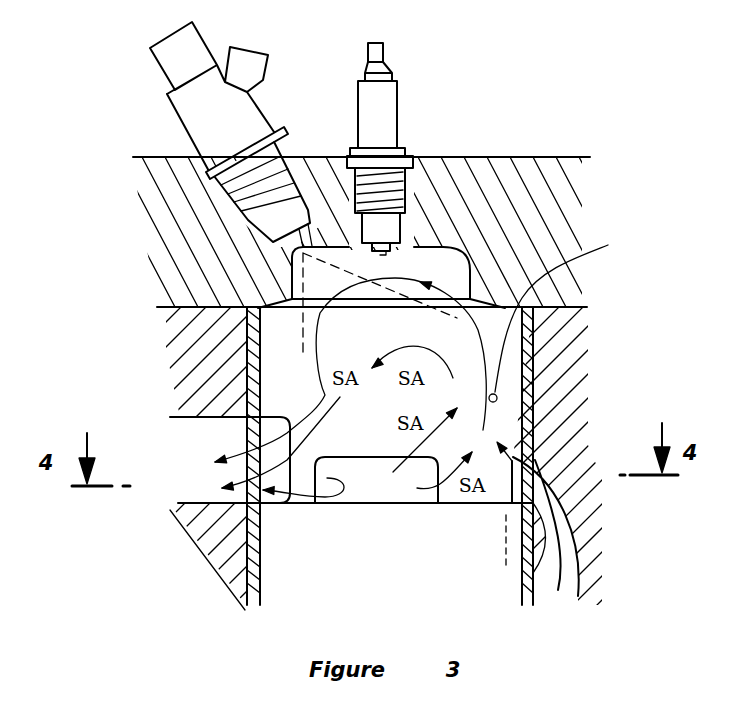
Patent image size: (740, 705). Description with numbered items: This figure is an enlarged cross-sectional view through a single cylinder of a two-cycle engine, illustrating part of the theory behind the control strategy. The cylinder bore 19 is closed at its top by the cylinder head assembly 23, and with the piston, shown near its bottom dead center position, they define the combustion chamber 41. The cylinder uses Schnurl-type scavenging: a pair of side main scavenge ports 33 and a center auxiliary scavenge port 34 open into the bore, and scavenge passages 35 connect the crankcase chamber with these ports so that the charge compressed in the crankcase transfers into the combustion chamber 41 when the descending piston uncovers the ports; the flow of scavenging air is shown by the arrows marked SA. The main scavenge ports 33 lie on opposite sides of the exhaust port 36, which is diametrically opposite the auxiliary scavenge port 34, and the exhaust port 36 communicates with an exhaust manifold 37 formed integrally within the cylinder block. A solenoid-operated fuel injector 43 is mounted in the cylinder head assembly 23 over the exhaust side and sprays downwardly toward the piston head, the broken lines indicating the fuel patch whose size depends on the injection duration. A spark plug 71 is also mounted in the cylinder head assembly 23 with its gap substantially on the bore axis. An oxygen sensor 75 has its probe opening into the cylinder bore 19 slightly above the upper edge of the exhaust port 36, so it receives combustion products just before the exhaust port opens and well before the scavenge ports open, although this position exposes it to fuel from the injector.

The cylinder bore 19 is at (535, 392).
The cylinder head assembly 23 is at (503, 167).
The main scavenge port 33 is at (378, 493).
The auxiliary scavenge port 34 is at (535, 447).
The scavenge passage 35 is at (580, 590).
The exhaust port 36 is at (250, 437).
The exhaust manifold 37 is at (133, 495).
The combustion chamber 41 is at (422, 275).
The fuel injector 43 is at (262, 111).
The spark plug 71 is at (403, 93).
The oxygen sensor 75 is at (568, 318).